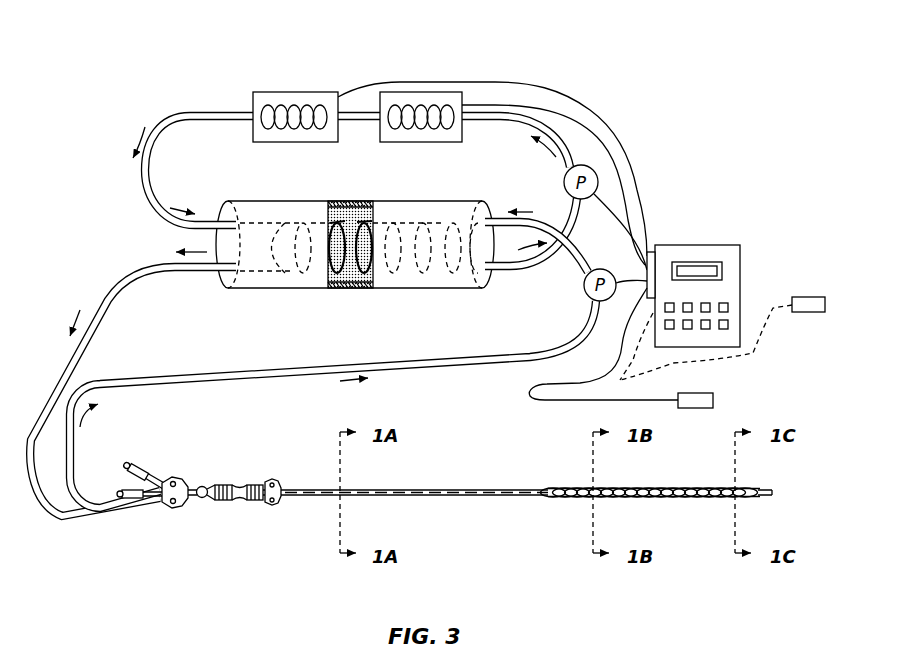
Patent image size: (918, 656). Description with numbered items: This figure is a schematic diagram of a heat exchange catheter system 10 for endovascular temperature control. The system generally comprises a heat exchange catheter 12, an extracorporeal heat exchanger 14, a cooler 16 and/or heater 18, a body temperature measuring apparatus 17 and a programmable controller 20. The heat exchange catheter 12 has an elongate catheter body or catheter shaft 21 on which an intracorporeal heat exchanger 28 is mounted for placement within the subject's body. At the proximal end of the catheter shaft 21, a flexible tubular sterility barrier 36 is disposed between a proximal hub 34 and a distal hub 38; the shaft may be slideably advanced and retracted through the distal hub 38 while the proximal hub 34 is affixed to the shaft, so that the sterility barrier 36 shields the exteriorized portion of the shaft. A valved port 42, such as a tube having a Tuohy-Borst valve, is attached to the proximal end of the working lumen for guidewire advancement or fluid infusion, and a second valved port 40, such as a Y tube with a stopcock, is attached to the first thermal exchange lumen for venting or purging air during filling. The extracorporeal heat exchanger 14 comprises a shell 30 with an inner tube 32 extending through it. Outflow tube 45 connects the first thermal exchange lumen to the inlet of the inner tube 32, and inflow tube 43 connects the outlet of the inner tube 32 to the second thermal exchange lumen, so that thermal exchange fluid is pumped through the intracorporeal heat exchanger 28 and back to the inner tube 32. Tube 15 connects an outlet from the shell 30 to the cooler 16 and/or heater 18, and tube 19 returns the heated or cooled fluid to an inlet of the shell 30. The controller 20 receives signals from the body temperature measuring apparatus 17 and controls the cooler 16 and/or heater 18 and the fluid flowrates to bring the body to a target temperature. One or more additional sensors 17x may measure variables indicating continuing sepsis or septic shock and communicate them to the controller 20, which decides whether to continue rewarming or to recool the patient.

The heat exchange catheter system 10 is at (617, 57).
The heat exchange catheter 12 is at (526, 528).
The extracorporeal heat exchanger 14 is at (330, 193).
The tube 15 is at (577, 145).
The cooler 16 is at (420, 92).
The body temperature measuring apparatus 17 is at (713, 400).
The additional sensor 17x is at (805, 297).
The heater 18 is at (295, 92).
The tube 19 is at (163, 120).
The programmable controller 20 is at (728, 268).
The catheter shaft 21 is at (452, 497).
The intracorporeal heat exchanger 28 is at (647, 510).
The shell 30 is at (277, 288).
The inner tube 32 is at (350, 288).
The proximal hub 34 is at (182, 503).
The sterility barrier 36 is at (228, 500).
The distal hub 38 is at (273, 503).
The second valved port 40 is at (133, 465).
The valved port 42 is at (127, 500).
The inflow tube 43 is at (108, 290).
The outflow tube 45 is at (458, 367).